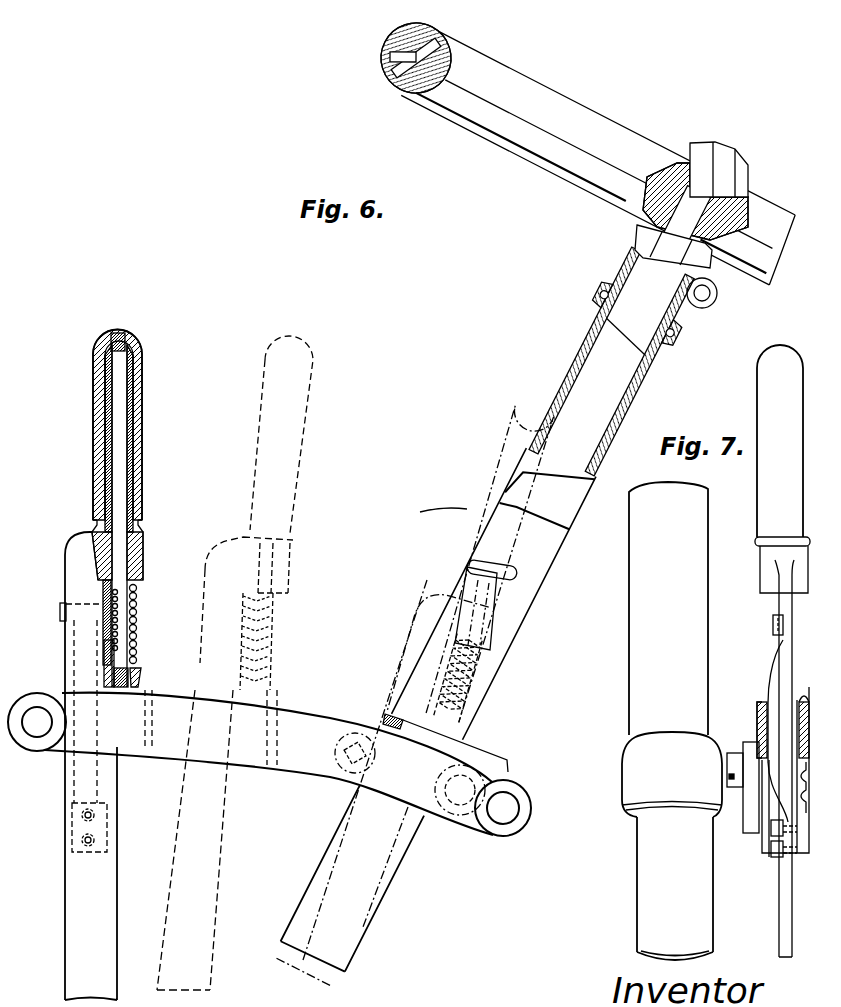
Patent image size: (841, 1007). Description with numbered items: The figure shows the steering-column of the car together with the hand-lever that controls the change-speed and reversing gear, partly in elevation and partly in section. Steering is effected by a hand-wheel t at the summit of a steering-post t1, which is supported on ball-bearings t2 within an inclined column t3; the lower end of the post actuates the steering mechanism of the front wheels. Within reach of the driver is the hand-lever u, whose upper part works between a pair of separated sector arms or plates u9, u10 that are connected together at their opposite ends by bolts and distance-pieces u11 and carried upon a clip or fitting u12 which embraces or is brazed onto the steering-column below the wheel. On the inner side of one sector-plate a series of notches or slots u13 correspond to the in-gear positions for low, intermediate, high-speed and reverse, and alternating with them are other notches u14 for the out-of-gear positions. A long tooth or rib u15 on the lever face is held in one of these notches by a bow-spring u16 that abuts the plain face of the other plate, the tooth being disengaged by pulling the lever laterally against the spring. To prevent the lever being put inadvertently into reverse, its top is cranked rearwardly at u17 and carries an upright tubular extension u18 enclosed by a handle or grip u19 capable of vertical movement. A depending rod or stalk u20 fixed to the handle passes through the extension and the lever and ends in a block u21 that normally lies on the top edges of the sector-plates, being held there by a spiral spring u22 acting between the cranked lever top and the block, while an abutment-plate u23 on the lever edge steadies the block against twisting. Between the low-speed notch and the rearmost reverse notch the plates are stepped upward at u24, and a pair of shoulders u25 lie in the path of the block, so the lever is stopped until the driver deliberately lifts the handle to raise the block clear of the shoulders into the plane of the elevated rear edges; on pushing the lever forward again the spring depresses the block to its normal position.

In FIG. 6, the hand-wheel t is at (562, 104).
In FIG. 6, the steering-post t1 is at (626, 266).
In FIG. 6, the ball-bearings t2 is at (597, 298).
In FIG. 6, the inclined column t3 is at (538, 601).
In FIG. 6, the hand-lever u is at (78, 652).
In FIG. 7, the hand-lever u is at (787, 644).
In FIG. 6, the sector arm or plate u9 is at (250, 764).
In FIG. 7, the sector arm or plate u9 is at (757, 702).
In FIG. 7, the sector arm or plate u10 is at (810, 698).
In FIG. 6, the bolts and distance-pieces u11 is at (520, 800).
In FIG. 6, the clip or fitting u12 is at (428, 823).
In FIG. 7, the clip or fitting u12 is at (672, 721).
In FIG. 6, the notches or slots u13 is at (107, 752).
In FIG. 7, the notches or slots u13 is at (800, 722).
In FIG. 6, the notches u14 is at (153, 707).
In FIG. 7, the tooth or rib u15 is at (797, 733).
In FIG. 7, the bow-spring u16 is at (765, 783).
In FIG. 6, the cranked top of lever u17 is at (80, 526).
In FIG. 7, the cranked top of lever u17 is at (768, 553).
In FIG. 6, the tubular extension u18 is at (140, 488).
In FIG. 6, the handle or grip u19 is at (142, 429).
In FIG. 7, the handle or grip u19 is at (780, 441).
In FIG. 6, the rod or stalk u20 is at (118, 408).
In FIG. 6, the block u21 is at (135, 670).
In FIG. 6, the spiral spring u22 is at (137, 595).
In FIG. 6, the abutment-plate u23 is at (100, 667).
In FIG. 6, the elevated step of sector-plates u24 is at (483, 741).
In FIG. 6, the shoulders u25 is at (390, 720).